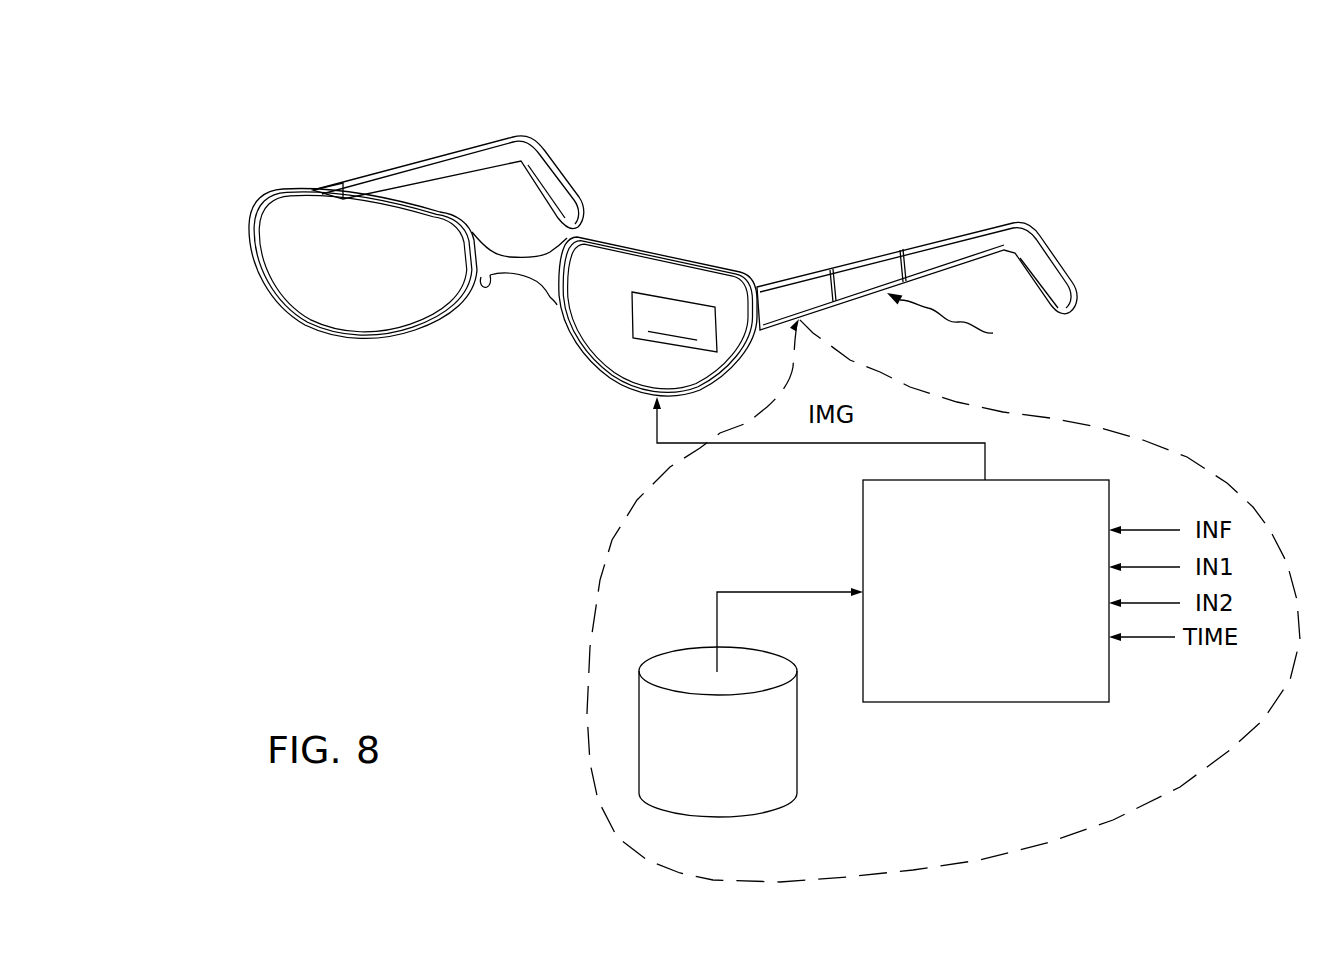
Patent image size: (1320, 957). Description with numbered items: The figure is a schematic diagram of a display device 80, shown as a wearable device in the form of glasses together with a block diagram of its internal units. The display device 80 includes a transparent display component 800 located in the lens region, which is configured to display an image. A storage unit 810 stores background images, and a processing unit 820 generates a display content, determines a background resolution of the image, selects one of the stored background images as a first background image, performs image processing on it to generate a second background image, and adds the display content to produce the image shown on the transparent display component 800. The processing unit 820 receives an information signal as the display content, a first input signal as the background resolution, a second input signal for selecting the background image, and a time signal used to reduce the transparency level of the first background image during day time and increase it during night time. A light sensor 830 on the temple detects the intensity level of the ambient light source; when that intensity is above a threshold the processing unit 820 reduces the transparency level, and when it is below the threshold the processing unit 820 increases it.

The display device 80 is at (243, 123).
The transparent display component 800 is at (603, 292).
The storage unit 810 is at (698, 789).
The processing unit 820 is at (966, 642).
The light sensor 830 is at (866, 270).